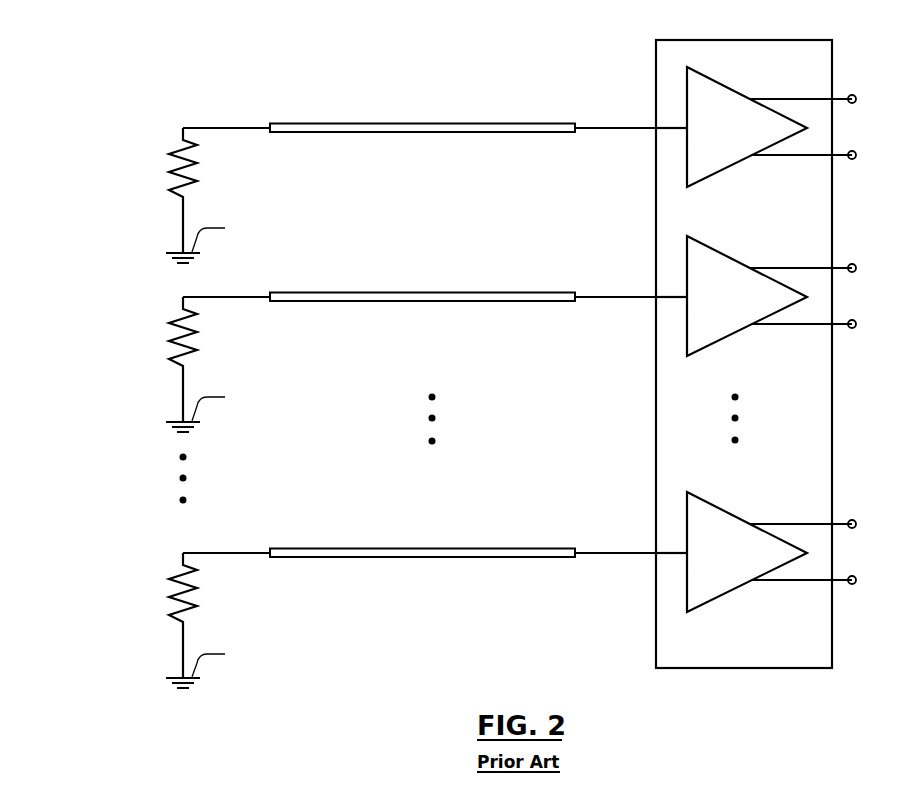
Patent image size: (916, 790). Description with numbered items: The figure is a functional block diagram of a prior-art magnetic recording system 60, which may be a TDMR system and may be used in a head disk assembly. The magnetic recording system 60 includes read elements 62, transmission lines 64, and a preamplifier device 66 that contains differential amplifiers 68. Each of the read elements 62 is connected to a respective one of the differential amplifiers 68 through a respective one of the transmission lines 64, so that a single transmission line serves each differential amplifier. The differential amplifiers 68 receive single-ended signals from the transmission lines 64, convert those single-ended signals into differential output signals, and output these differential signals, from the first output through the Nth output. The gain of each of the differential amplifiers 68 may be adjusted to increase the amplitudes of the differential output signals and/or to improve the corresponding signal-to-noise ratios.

The magnetic recording system 60 is at (199, 40).
The read element 62 is at (192, 172).
The transmission line 64 is at (504, 123).
The preamplifier device 66 is at (832, 68).
The differential amplifier 68 is at (732, 89).